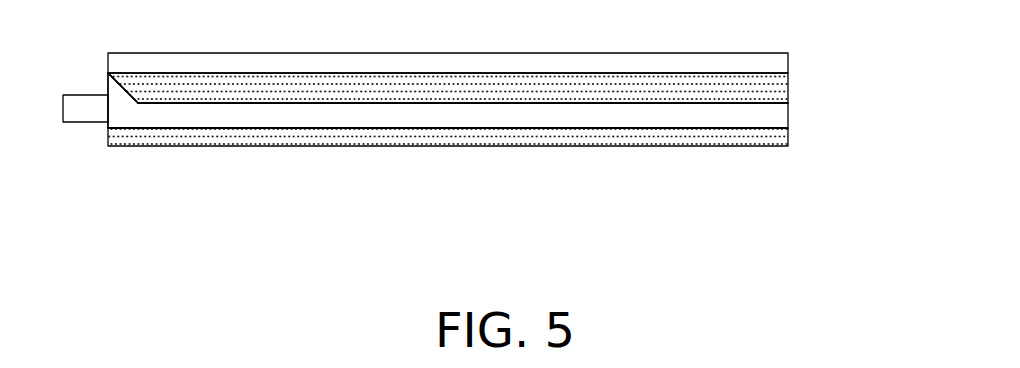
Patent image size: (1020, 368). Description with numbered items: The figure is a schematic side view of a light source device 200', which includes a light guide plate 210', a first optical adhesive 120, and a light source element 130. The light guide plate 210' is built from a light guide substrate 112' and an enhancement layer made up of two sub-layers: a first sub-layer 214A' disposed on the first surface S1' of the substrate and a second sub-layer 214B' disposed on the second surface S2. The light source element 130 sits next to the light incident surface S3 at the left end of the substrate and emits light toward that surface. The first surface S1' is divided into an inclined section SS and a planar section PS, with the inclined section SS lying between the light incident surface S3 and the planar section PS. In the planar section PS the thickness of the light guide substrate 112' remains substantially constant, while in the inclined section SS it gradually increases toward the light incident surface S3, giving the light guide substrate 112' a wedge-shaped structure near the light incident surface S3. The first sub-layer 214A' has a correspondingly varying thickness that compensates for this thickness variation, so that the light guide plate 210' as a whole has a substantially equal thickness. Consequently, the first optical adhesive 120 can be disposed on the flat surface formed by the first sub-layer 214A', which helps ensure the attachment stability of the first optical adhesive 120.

The first optical adhesive 120 is at (742, 63).
The light source element 130 is at (86, 103).
The first sub-layer 214A' is at (505, 71).
The light guide substrate 112' is at (473, 100).
The second sub-layer 214B' is at (505, 136).
The light guide plate 210' is at (534, 95).
The light source device 200' is at (509, 131).
The first surface S1' is at (448, 165).
The inclined section SS is at (128, 97).
The planar section PS is at (187, 106).
The second surface S2 is at (391, 127).
The light incident surface S3 is at (106, 108).